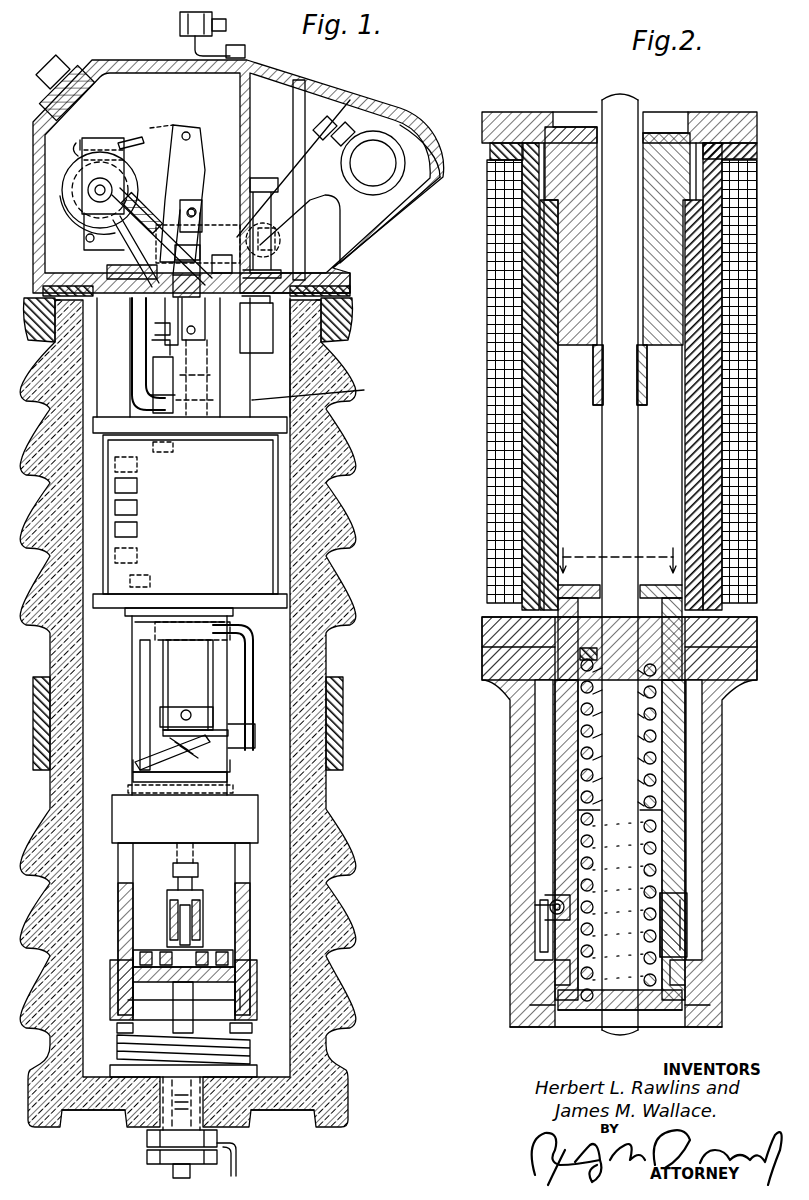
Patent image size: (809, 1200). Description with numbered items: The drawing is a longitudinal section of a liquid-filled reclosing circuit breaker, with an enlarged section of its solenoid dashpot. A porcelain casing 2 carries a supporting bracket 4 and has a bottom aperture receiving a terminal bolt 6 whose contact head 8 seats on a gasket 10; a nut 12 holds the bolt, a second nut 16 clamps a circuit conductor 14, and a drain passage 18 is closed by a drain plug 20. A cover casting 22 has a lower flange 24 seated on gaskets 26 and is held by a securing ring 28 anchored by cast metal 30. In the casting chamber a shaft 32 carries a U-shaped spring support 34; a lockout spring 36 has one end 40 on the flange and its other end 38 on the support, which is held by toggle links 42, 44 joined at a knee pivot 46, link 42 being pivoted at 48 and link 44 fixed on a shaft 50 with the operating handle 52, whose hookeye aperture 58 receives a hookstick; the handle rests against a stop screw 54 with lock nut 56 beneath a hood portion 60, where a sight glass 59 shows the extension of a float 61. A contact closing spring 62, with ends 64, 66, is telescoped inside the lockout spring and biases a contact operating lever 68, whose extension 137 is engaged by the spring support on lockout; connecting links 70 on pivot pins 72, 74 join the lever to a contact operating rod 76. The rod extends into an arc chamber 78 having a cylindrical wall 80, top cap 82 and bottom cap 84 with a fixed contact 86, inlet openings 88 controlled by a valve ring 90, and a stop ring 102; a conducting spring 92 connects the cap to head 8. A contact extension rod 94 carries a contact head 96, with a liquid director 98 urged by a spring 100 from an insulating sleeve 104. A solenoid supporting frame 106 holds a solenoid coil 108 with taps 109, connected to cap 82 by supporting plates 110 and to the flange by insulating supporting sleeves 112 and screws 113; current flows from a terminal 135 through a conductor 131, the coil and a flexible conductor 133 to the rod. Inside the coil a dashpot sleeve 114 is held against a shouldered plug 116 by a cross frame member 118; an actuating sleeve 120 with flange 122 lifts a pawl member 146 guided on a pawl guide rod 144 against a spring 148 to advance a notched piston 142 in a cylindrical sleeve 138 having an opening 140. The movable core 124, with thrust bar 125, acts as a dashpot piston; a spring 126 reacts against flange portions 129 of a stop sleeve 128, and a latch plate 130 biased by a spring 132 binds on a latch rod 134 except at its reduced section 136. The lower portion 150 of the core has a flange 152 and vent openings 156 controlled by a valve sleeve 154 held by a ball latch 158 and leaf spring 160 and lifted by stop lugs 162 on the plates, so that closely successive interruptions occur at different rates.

In FIG. 1, the casing 2 is at (340, 468).
In FIG. 1, the supporting bracket 4 is at (344, 728).
In FIG. 1, the terminal bolt 6 is at (195, 1125).
In FIG. 1, the contact head 8 is at (252, 1070).
In FIG. 1, the gasket 10 is at (188, 1116).
In FIG. 1, the nut 12 is at (148, 1140).
In FIG. 1, the circuit conductor 14 is at (237, 1171).
In FIG. 1, the second nut 16 is at (148, 1158).
In FIG. 1, the drain passage 18 is at (195, 1085).
In FIG. 1, the drain plug 20 is at (190, 1172).
In FIG. 1, the cover casting 22 is at (157, 47).
In FIG. 1, the lower flange 24 is at (316, 275).
In FIG. 1, the gaskets 26 is at (352, 290).
In FIG. 1, the securing ring 28 is at (354, 333).
In FIG. 1, the cast metal 30 is at (352, 340).
In FIG. 1, the shaft 32 is at (92, 188).
In FIG. 1, the spring support 34 is at (110, 138).
In FIG. 1, the lockout spring 36 is at (70, 233).
In FIG. 1, the end of lockout spring 38 is at (153, 128).
In FIG. 1, the end of lockout spring 40 is at (100, 257).
In FIG. 1, the toggle link 42 is at (134, 248).
In FIG. 1, the toggle link 44 is at (233, 225).
In FIG. 1, the toggle knee pivot 46 is at (152, 208).
In FIG. 1, the pivot 48 is at (88, 240).
In FIG. 1, the shaft 50 is at (276, 238).
In FIG. 1, the operating handle 52 is at (322, 205).
In FIG. 1, the stop screw 54 is at (343, 128).
In FIG. 1, the lock nut 56 is at (325, 120).
In FIG. 1, the hookeye aperture 58 is at (388, 165).
In FIG. 1, the sight glass 59 is at (263, 188).
In FIG. 1, the hood portion 60 is at (408, 118).
In FIG. 1, the float 61 is at (261, 336).
In FIG. 1, the contact closing spring 62 is at (65, 197).
In FIG. 1, the end of contact closing spring 64 is at (140, 138).
In FIG. 1, the end of contact closing spring 66 is at (140, 192).
In FIG. 1, the contact operating lever 68 is at (183, 206).
In FIG. 1, the connecting links 70 is at (197, 305).
In FIG. 1, the pivot pin 72 is at (200, 246).
In FIG. 1, the pivot pin 74 is at (198, 331).
In FIG. 1, the contact operating rod 76 is at (200, 356).
In FIG. 2, the contact operating rod 76 is at (612, 106).
In FIG. 1, the arc chamber 78 is at (280, 903).
In FIG. 1, the cylindrical wall 80 is at (120, 905).
In FIG. 1, the top cap 82 is at (116, 806).
In FIG. 1, the bottom cap 84 is at (114, 988).
In FIG. 1, the fixed contact 86 is at (190, 1003).
In FIG. 1, the inlet openings 88 is at (118, 1029).
In FIG. 1, the valve ring 90 is at (122, 1010).
In FIG. 1, the coil compression spring 92 is at (250, 1046).
In FIG. 1, the contact extension rod 94 is at (200, 927).
In FIG. 1, the contact head 96 is at (250, 975).
In FIG. 1, the liquid director 98 is at (240, 957).
In FIG. 1, the coil compression spring 100 is at (171, 926).
In FIG. 1, the stop ring 102 is at (250, 1000).
In FIG. 1, the sleeve 104 is at (201, 915).
In FIG. 1, the solenoid supporting frame 106 is at (282, 426).
In FIG. 2, the solenoid supporting frame 106 is at (737, 112).
In FIG. 1, the solenoid coil 108 is at (258, 518).
In FIG. 2, the solenoid coil 108 is at (486, 414).
In FIG. 1, the taps 109 is at (137, 465).
In FIG. 1, the supporting plates 110 is at (222, 688).
In FIG. 2, the supporting plates 110 is at (520, 849).
In FIG. 1, the supporting sleeves 112 is at (95, 357).
In FIG. 1, the screws 113 is at (171, 271).
In FIG. 2, the dashpot sleeve 114 is at (527, 452).
In FIG. 2, the shouldered plug 116 is at (566, 128).
In FIG. 1, the cross frame member 118 is at (133, 615).
In FIG. 2, the cross frame member 118 is at (490, 667).
In FIG. 2, the actuating sleeve 120 is at (598, 275).
In FIG. 2, the flange 122 is at (658, 125).
In FIG. 1, the movable core 124 is at (205, 665).
In FIG. 2, the movable core 124 is at (672, 796).
In FIG. 2, the thrust bar 125 is at (582, 590).
In FIG. 2, the coil compression spring 126 is at (657, 826).
In FIG. 2, the stop sleeve 128 is at (645, 727).
In FIG. 2, the flange portions 129 is at (582, 655).
In FIG. 1, the latch plate 130 is at (152, 752).
In FIG. 1, the conductor 131 is at (150, 367).
In FIG. 1, the coil compression spring 132 is at (233, 755).
In FIG. 1, the flexible conductor 133 is at (252, 652).
In FIG. 1, the latch rod 134 is at (142, 672).
In FIG. 1, the terminal 135 is at (183, 18).
In FIG. 1, the reduced section 136 is at (136, 768).
In FIG. 1, the extension 137 is at (80, 142).
In FIG. 1, the cylindrical sleeve 138 is at (155, 380).
In FIG. 1, the opening 140 is at (160, 330).
In FIG. 1, the notched piston 142 is at (160, 346).
In FIG. 1, the pawl guide rod 144 is at (175, 312).
In FIG. 1, the pawl member 146 is at (207, 398).
In FIG. 1, the coil compression spring 148 is at (152, 398).
In FIG. 1, the lower portion of core 150 is at (224, 732).
In FIG. 2, the lower portion of core 150 is at (665, 925).
In FIG. 1, the flange 152 is at (252, 745).
In FIG. 2, the flange 152 is at (680, 1006).
In FIG. 1, the valve sleeve 154 is at (206, 715).
In FIG. 2, the valve sleeve 154 is at (688, 903).
In FIG. 2, the vent openings 156 is at (566, 972).
In FIG. 2, the ball latch 158 is at (548, 905).
In FIG. 2, the leaf spring 160 is at (545, 915).
In FIG. 2, the stop lugs 162 is at (530, 996).